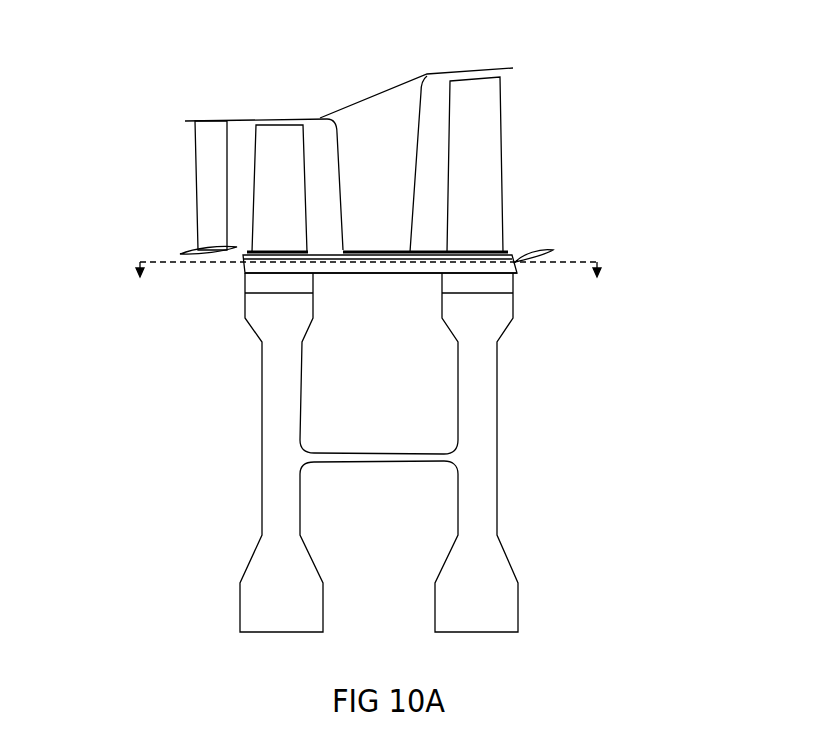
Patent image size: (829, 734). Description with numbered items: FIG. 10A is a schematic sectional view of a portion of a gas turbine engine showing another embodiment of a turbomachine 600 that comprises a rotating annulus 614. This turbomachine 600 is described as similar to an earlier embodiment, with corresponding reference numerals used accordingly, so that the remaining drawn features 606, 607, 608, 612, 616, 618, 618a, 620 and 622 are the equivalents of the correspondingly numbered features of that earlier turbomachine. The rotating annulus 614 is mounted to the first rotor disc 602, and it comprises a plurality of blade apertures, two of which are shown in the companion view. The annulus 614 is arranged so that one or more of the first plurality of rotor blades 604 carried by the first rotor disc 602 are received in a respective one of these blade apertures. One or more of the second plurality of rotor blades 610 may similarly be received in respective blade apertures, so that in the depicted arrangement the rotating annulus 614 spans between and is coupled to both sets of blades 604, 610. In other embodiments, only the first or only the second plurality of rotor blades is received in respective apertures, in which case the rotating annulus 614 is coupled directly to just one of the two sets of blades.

The turbomachine 600 is at (120, 94).
The first rotor disc 602 is at (262, 392).
The first plurality of rotor blades 604 is at (273, 121).
The fillet region 606 is at (313, 130).
The sloped tip edge 607 is at (435, 71).
The second shank leg 608 is at (497, 388).
The second plurality of rotor blades 610 is at (505, 118).
The central cavity 612 is at (390, 405).
The rotating annulus 614 is at (402, 286).
The platform 616 is at (430, 253).
The first airfoil 618 is at (193, 187).
The seal wing of first airfoil 618a is at (217, 254).
The vane body 620 is at (390, 171).
The seal wing 622 is at (540, 257).